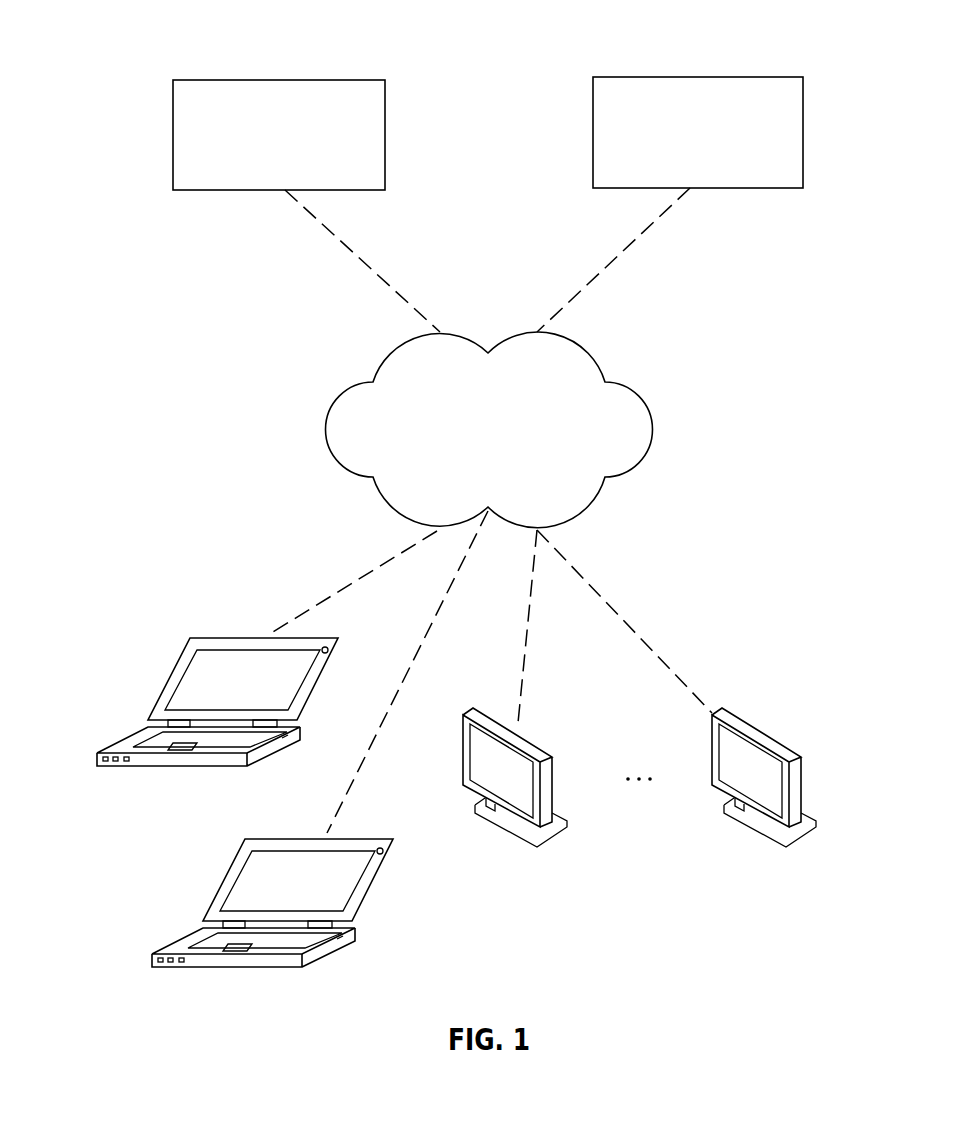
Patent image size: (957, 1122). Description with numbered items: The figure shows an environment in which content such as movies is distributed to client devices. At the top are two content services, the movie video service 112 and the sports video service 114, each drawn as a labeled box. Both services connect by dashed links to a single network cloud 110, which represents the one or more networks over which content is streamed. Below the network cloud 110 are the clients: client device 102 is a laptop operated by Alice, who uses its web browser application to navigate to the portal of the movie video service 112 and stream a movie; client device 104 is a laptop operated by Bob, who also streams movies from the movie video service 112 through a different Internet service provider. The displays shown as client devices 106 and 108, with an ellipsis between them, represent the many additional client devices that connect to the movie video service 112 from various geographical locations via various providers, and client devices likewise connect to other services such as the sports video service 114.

The client device 102 is at (110, 747).
The client device 104 is at (165, 947).
The client device 106 is at (553, 754).
The client device 108 is at (802, 754).
The network cloud 110 is at (653, 428).
The movie video service 112 is at (280, 80).
The sports video service 114 is at (700, 78).